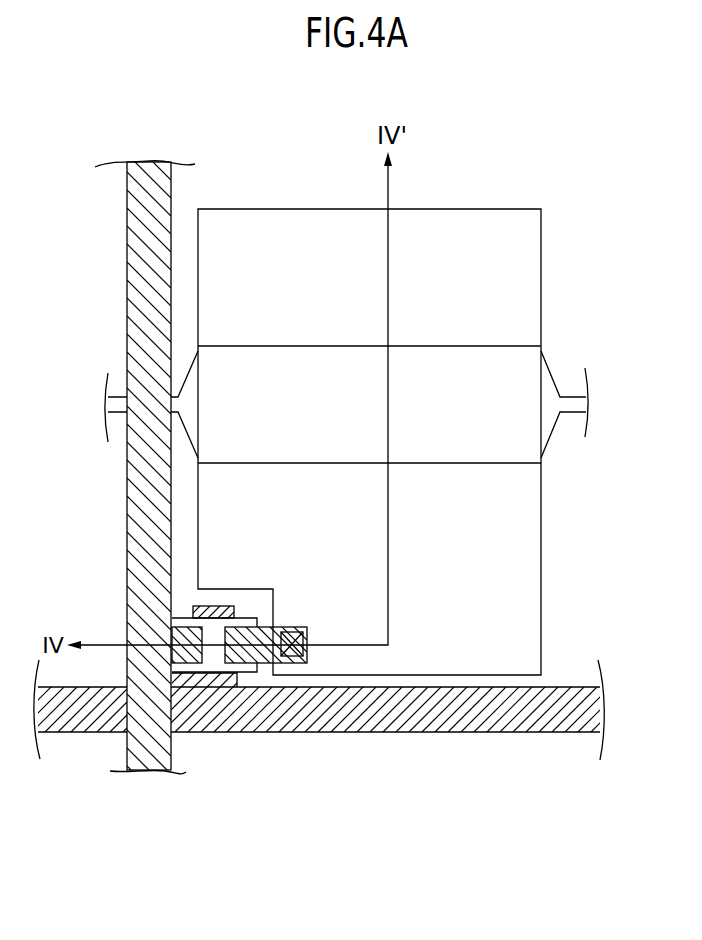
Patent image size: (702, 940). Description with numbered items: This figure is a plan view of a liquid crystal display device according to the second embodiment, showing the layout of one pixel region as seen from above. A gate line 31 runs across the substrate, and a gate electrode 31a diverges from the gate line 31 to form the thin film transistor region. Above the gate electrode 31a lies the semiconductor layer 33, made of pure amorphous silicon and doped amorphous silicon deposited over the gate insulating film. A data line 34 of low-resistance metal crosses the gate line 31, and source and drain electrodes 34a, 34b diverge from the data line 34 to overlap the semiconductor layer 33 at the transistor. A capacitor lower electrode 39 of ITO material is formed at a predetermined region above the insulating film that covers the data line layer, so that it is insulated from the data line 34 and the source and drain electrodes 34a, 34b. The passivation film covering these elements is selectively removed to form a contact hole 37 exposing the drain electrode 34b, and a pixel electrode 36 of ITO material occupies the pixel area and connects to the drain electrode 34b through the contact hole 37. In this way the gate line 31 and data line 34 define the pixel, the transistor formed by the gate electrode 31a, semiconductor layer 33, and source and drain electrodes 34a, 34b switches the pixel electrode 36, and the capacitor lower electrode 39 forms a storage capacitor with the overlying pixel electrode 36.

The gate line 31 is at (487, 732).
The gate electrode 31a is at (210, 680).
The semiconductor layer 33 is at (211, 614).
The data line 34 is at (146, 528).
The source electrode 34a is at (177, 633).
The drain electrode 34b is at (264, 663).
The pixel electrode 36 is at (532, 560).
The contact hole 37 is at (294, 656).
The capacitor lower electrode 39 is at (523, 346).